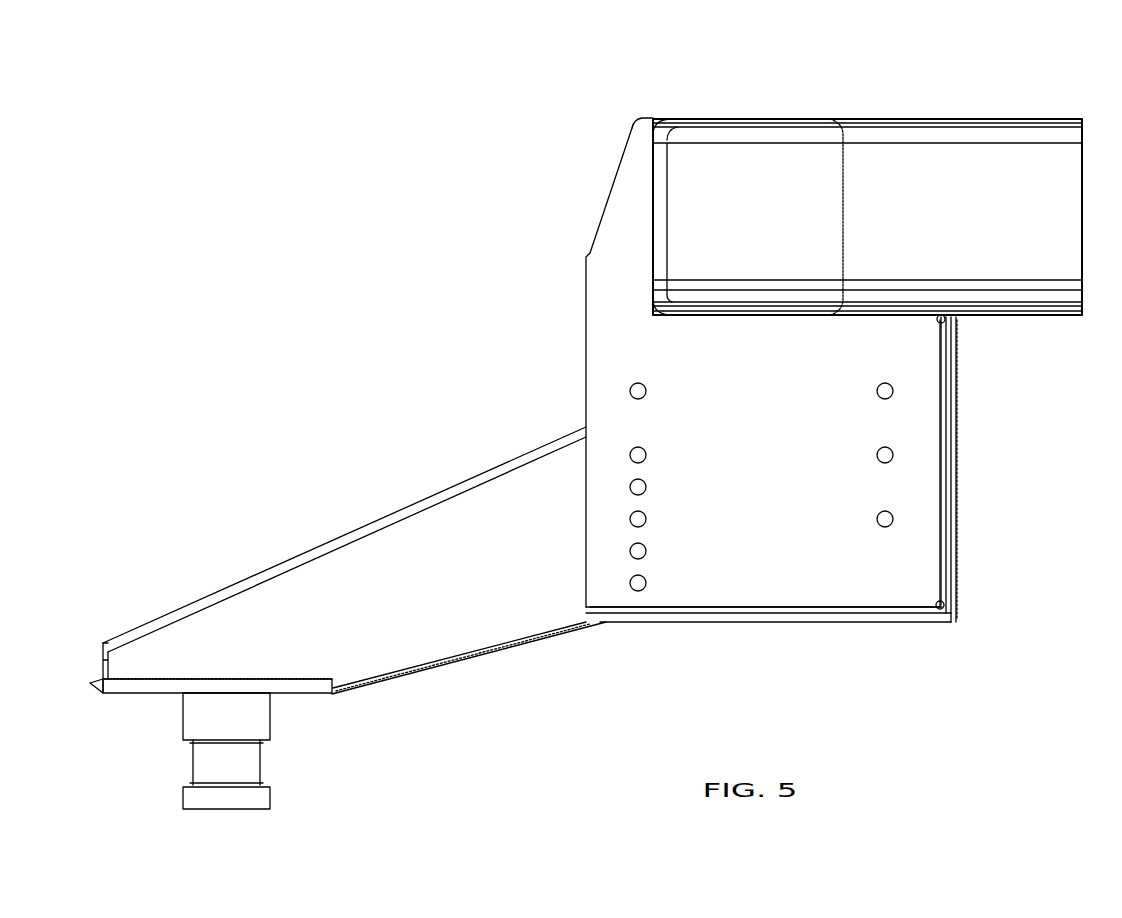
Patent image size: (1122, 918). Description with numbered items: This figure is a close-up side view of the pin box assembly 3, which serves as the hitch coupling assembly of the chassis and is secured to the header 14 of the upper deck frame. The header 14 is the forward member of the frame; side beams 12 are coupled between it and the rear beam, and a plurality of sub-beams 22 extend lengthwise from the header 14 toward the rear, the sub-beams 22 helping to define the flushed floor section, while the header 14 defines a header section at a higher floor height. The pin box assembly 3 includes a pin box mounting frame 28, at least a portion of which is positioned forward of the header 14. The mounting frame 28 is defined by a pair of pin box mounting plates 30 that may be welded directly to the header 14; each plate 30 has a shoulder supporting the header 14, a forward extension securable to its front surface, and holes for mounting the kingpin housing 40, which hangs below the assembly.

The pin box assembly 3 is at (268, 330).
The side beam 12 is at (962, 178).
The header 14 is at (688, 125).
The sub-beam 22 is at (998, 295).
The pin box mounting frame 28 is at (505, 337).
The pin box mounting plate 30 is at (755, 558).
The kingpin housing 40 is at (263, 602).